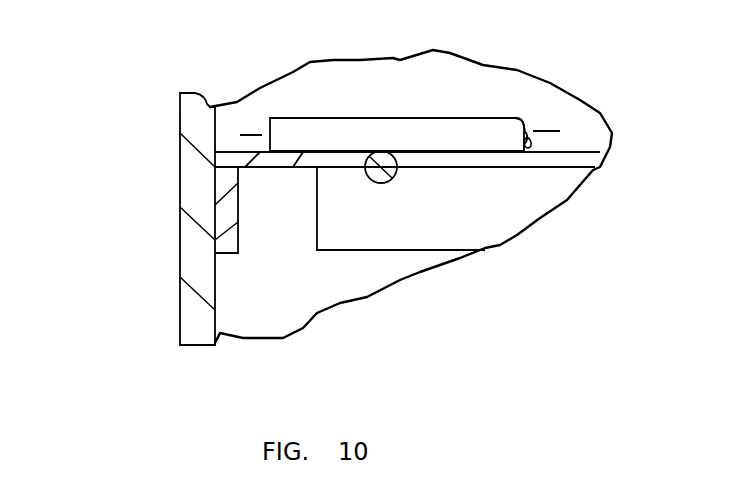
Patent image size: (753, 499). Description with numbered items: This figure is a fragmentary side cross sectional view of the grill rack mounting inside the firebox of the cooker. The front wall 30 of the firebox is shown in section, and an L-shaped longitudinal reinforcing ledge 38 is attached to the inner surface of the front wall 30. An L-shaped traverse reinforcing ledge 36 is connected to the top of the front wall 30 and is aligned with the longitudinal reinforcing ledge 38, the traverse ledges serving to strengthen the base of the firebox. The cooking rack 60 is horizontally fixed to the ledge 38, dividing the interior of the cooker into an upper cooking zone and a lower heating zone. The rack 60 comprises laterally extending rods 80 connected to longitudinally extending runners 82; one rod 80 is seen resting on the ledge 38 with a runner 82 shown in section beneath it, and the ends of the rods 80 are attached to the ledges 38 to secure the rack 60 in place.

The front wall 30 is at (200, 268).
The traverse reinforcing ledge 36 is at (458, 217).
The longitudinal reinforcing ledge 38 is at (222, 202).
The cooking rack 60 is at (397, 118).
The rod 80 is at (495, 123).
The runner 82 is at (388, 173).